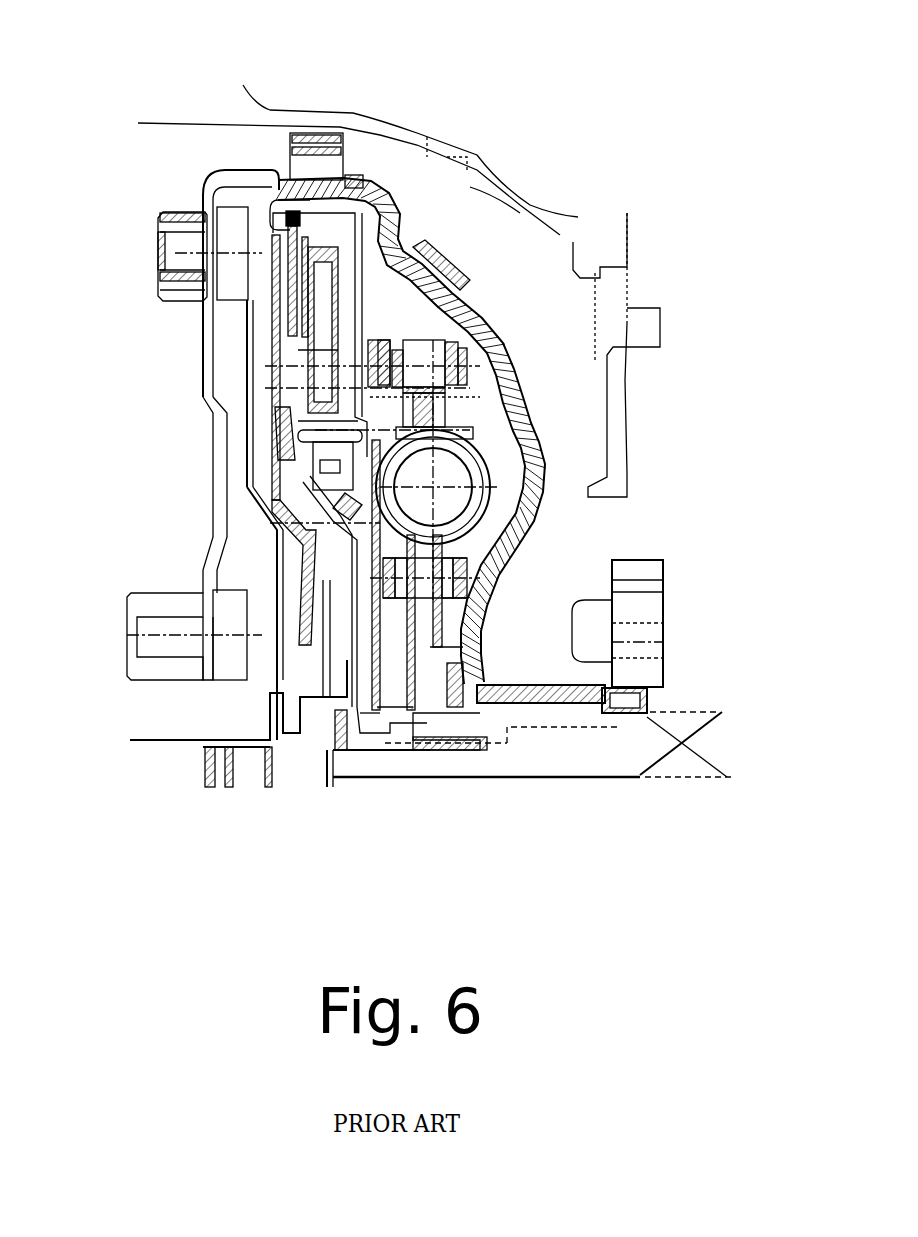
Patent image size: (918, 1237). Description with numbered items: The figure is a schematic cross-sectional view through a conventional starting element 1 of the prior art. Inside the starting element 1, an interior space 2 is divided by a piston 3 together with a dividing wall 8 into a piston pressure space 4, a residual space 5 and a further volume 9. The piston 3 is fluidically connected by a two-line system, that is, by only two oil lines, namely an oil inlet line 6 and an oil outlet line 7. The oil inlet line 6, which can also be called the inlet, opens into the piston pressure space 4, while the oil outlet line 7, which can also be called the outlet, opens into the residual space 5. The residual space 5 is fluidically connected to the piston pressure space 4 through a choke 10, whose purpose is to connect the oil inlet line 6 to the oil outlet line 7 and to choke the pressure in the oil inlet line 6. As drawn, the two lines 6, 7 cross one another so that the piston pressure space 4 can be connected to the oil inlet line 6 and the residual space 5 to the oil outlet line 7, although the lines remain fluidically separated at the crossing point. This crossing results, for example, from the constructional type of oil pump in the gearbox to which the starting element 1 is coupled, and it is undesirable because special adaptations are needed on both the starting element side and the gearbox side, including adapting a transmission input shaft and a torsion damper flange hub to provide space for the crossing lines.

The starting element 1 is at (548, 88).
The interior space 2 is at (424, 322).
The piston 3 is at (323, 657).
The piston pressure space 4 is at (365, 690).
The residual space 5 is at (480, 402).
The oil inlet line 6 is at (529, 785).
The oil outlet line 7 is at (667, 723).
The dividing wall 8 is at (343, 572).
The further volume 9 is at (277, 540).
The choke 10 is at (307, 543).